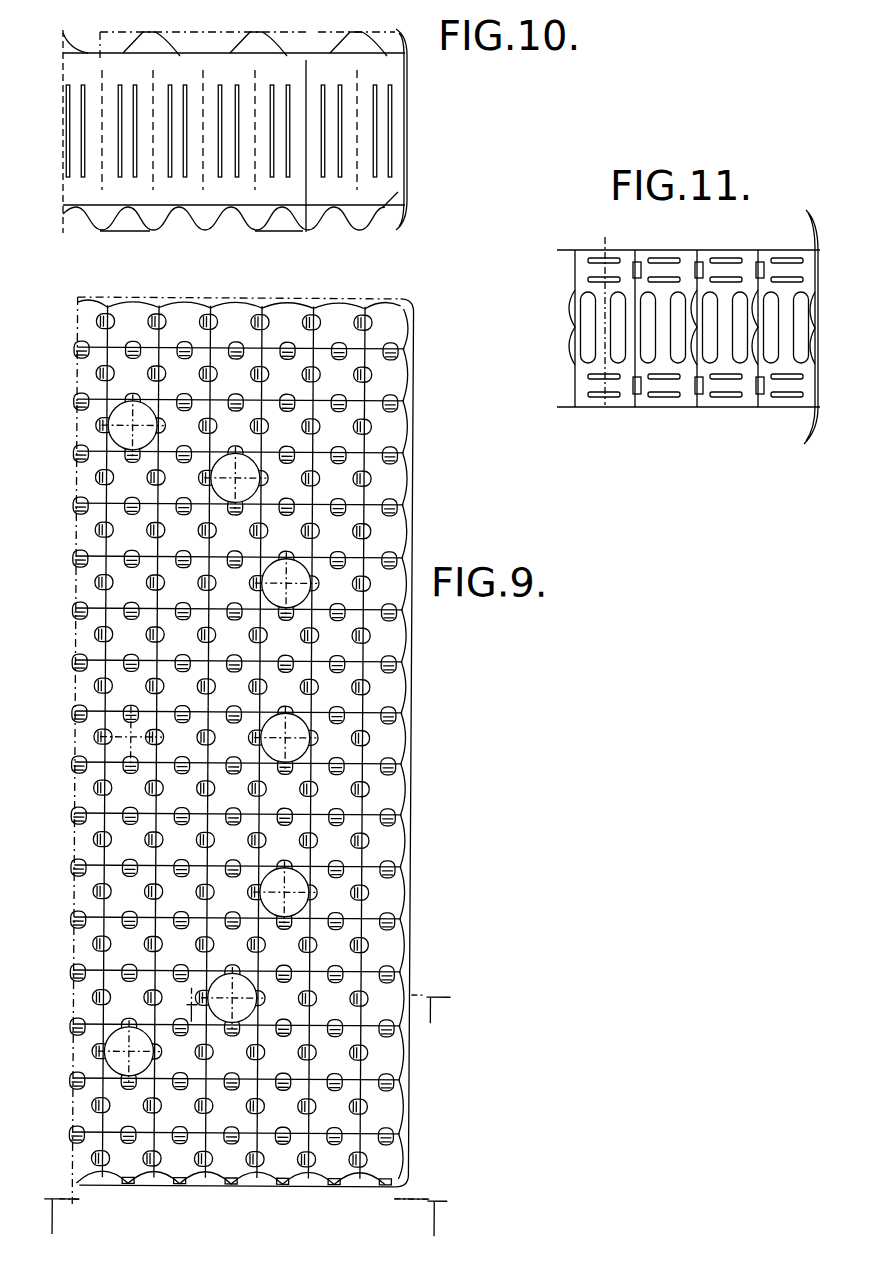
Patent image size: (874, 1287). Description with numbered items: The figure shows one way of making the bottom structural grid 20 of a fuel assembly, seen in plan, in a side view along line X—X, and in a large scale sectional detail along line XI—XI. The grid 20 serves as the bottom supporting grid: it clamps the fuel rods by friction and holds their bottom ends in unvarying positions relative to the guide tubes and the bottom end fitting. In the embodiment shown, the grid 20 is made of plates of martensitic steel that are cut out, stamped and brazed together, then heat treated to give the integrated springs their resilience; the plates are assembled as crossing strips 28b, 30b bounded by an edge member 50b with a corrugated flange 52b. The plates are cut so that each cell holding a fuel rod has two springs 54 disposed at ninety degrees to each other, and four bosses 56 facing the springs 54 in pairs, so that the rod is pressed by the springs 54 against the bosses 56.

In FIG. 10, the bottom structural grid 20 is at (410, 156).
In FIG. 11, the bottom structural grid 20 is at (755, 410).
In FIG. 9, the bottom structural grid 20 is at (420, 805).
In FIG. 9, the longitudinal strips 28b is at (103, 566).
In FIG. 9, the transverse strips 30b is at (118, 760).
In FIG. 11, the side rail 50b is at (808, 212).
In FIG. 9, the side rail 50b is at (411, 459).
In FIG. 10, the corrugated edge flange 52b is at (90, 192).
In FIG. 9, the corrugated edge flange 52b is at (235, 1186).
In FIG. 10, the springs 54 is at (232, 113).
In FIG. 11, the springs 54 is at (607, 327).
In FIG. 11, the bosses 56 is at (728, 263).